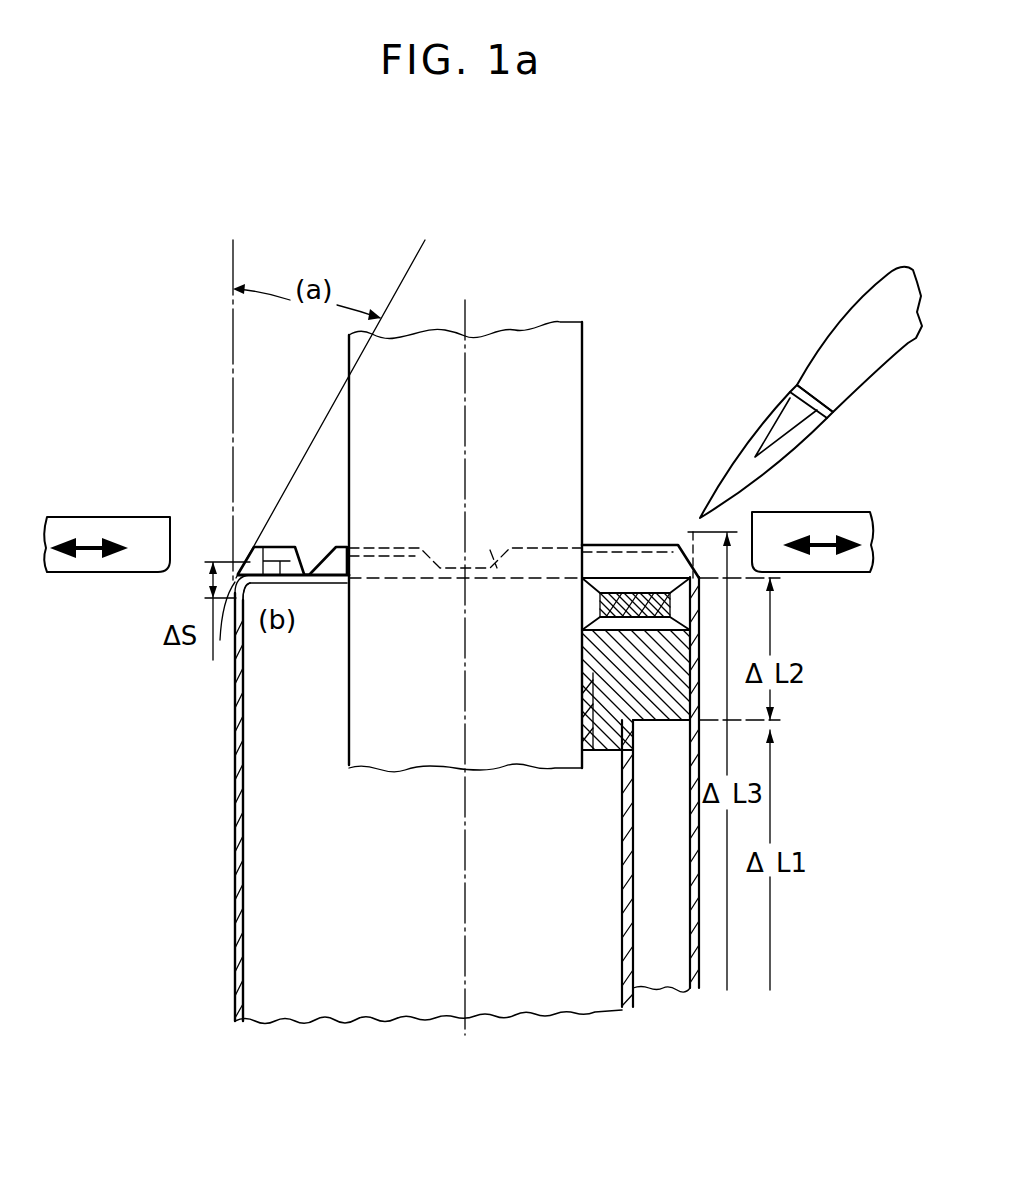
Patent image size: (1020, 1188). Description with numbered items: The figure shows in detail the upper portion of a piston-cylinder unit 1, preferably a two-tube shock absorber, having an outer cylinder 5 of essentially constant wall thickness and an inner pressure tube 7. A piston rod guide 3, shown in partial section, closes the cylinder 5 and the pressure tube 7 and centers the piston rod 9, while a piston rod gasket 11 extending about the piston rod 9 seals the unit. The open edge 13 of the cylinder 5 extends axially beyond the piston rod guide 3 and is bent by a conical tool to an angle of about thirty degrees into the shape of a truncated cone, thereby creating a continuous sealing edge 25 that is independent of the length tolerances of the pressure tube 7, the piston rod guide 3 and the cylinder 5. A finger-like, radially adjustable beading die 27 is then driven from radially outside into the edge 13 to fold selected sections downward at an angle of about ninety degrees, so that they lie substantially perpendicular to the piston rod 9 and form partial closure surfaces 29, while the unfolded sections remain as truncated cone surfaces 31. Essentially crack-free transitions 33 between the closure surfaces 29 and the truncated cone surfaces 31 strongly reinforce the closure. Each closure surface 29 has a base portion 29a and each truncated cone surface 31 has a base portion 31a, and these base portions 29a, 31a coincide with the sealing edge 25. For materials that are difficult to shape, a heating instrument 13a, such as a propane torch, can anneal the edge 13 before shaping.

The piston-cylinder unit 1 is at (120, 896).
The piston rod guide 3 is at (675, 635).
The cylinder 5 is at (237, 775).
The pressure tube 7 is at (627, 876).
The piston rod 9 is at (383, 432).
The piston rod gasket 11 is at (598, 586).
The open edge 13 is at (703, 534).
The heating instrument 13a is at (833, 352).
The sealing edge 25 is at (708, 563).
The beading die 27 is at (130, 530).
The partial closure surfaces 29 is at (255, 566).
The base portion 29a is at (246, 622).
The truncated cone surfaces 31 is at (336, 540).
The base portion 31a is at (285, 580).
The transitions 33 is at (262, 560).